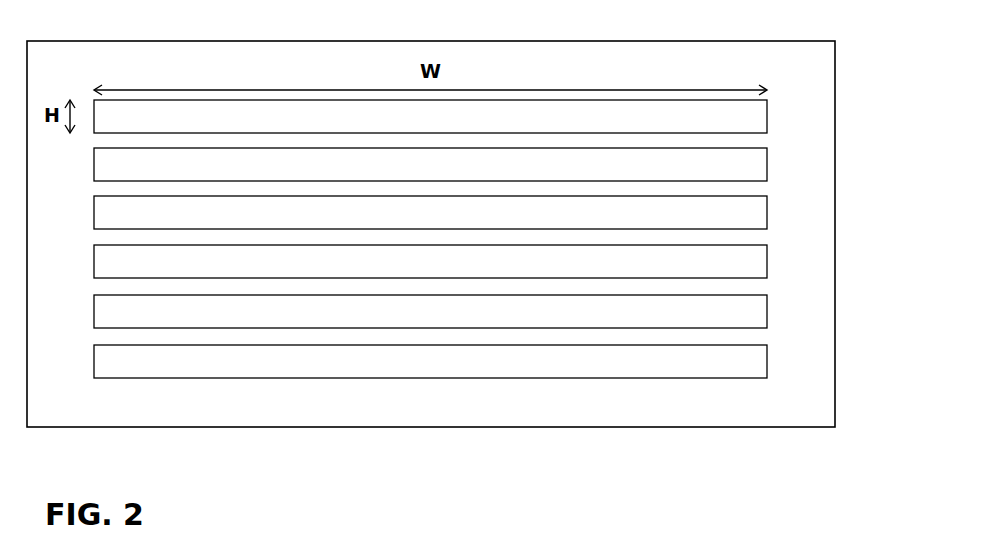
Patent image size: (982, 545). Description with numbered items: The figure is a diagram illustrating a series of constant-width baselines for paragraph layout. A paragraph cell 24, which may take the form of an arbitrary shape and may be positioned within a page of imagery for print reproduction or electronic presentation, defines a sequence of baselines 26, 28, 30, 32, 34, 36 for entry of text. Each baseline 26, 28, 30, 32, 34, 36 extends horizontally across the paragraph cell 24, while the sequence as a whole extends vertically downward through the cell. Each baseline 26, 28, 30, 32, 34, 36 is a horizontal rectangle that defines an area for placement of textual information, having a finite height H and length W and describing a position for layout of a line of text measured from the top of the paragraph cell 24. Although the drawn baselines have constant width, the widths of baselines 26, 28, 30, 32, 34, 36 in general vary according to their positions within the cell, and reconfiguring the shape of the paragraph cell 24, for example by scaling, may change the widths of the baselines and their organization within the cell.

The paragraph cell 24 is at (430, 41).
The baseline 26 is at (767, 113).
The baseline 28 is at (767, 162).
The baseline 30 is at (767, 212).
The baseline 32 is at (767, 261).
The baseline 34 is at (767, 311).
The baseline 36 is at (767, 361).